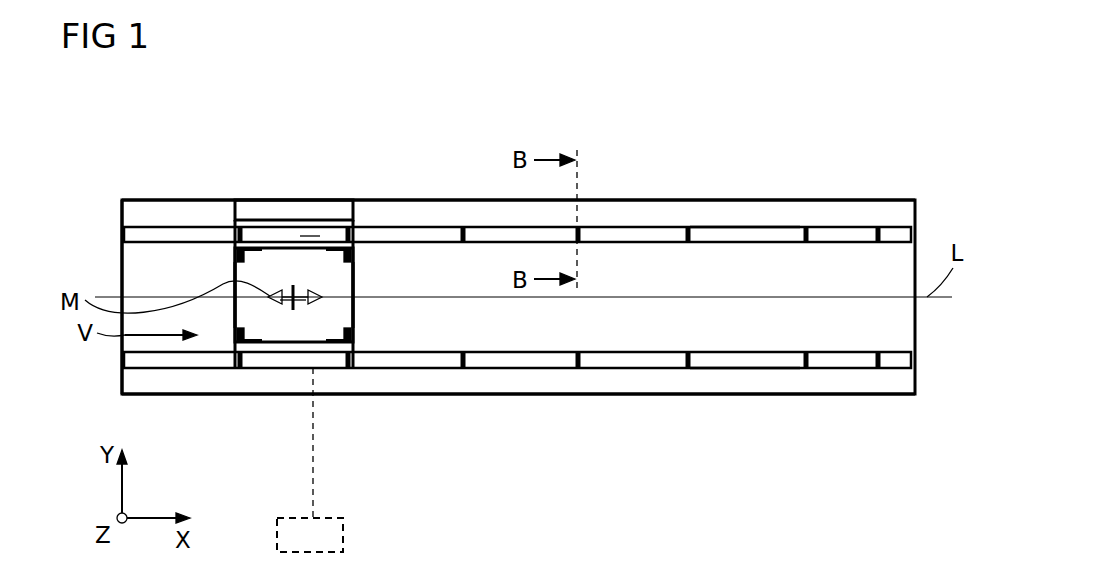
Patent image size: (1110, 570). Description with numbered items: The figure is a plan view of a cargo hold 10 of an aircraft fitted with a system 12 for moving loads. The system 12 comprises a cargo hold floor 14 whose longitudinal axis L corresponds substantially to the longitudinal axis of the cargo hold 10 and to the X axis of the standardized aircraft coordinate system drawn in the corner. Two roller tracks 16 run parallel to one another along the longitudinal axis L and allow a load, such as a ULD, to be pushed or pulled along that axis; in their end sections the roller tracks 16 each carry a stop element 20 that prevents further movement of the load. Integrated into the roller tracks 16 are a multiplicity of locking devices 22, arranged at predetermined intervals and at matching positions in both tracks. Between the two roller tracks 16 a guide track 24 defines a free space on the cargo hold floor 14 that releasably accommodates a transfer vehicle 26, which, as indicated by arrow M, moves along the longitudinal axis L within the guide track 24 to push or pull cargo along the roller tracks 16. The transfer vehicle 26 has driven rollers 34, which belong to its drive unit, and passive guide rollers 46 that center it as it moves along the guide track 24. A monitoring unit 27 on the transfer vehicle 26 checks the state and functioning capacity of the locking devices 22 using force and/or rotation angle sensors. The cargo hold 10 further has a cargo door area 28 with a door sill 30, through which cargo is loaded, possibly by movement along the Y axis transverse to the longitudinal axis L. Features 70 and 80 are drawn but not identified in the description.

The cargo hold 10 is at (790, 76).
The system for moving loads 12 is at (880, 163).
The cargo hold floor 14 is at (875, 386).
The roller tracks 16 is at (720, 227).
The stop element 20 is at (122, 235).
The locking devices 22 is at (465, 228).
The guide track 24 is at (125, 258).
The transfer vehicle 26 is at (292, 290).
The monitoring unit 27 is at (345, 546).
The cargo door area 28 is at (223, 176).
The door sill 30 is at (318, 240).
The driven rollers 34 is at (238, 252).
The passive guide rollers 46 is at (246, 252).
The centre pivot 70 is at (298, 245).
The side plates 80 is at (232, 272).